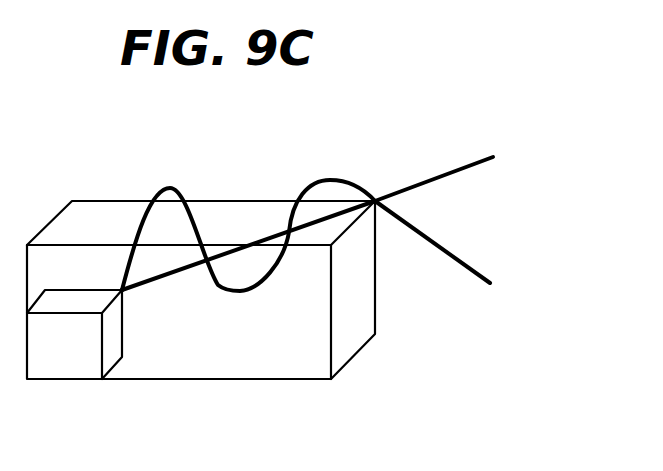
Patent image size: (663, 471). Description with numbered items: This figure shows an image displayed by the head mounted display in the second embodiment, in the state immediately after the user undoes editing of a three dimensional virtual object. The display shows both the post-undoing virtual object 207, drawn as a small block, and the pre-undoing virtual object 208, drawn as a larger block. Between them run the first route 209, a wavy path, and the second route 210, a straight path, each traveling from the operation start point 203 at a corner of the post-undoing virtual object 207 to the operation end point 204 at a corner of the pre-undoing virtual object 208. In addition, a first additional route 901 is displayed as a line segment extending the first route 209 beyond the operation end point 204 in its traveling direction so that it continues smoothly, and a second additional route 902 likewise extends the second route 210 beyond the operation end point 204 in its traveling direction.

The operation start point 203 is at (125, 293).
The operation end point 204 is at (377, 197).
The post-undoing virtual object 207 is at (60, 380).
The pre-undoing virtual object 208 is at (377, 310).
The first route 209 is at (167, 185).
The second route 210 is at (168, 277).
The first additional route 901 is at (462, 262).
The second additional route 902 is at (460, 168).